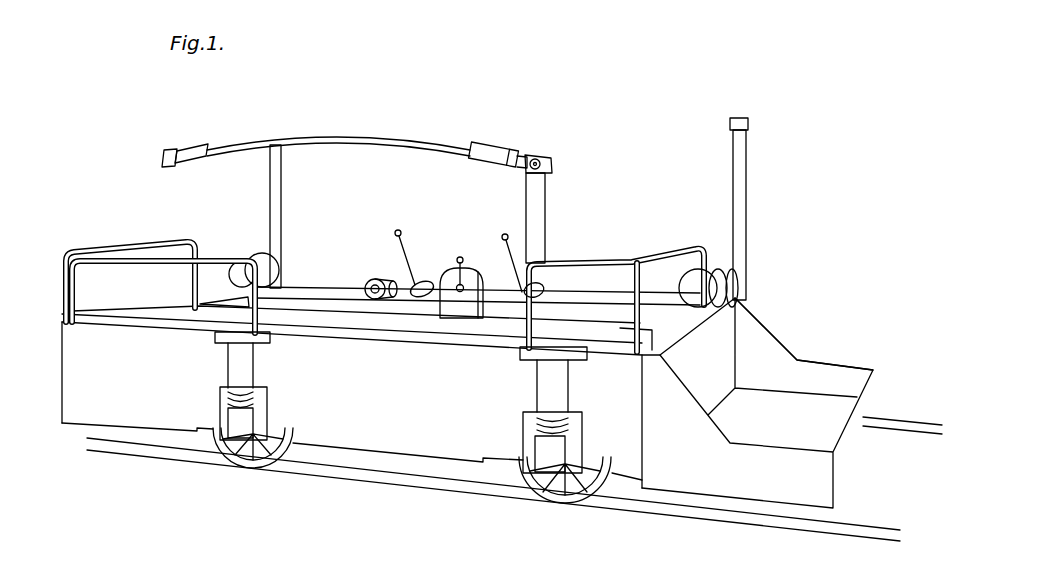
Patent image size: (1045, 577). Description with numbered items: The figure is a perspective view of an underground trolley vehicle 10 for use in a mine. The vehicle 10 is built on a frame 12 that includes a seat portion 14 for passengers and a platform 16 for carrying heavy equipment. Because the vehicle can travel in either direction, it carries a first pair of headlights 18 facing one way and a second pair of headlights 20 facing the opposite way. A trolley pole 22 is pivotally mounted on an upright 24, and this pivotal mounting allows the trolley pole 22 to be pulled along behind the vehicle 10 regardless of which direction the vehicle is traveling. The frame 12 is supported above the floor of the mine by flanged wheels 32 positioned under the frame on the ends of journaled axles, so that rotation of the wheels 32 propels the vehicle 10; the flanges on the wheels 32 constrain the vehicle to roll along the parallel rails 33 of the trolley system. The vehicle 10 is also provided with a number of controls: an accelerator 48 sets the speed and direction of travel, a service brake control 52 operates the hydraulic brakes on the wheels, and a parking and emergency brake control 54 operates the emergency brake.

The vehicle 10 is at (840, 232).
The frame 12 is at (663, 492).
The seat portion 14 is at (356, 316).
The platform 16 is at (764, 412).
The first pair of headlights 18 is at (256, 255).
The second pair of headlights 20 is at (726, 262).
The trolley pole 22 is at (353, 138).
The upright 24 is at (542, 222).
The flanged wheels 32 is at (237, 470).
The parallel rails 33 is at (913, 425).
The accelerator 48 is at (453, 313).
The service brake control 52 is at (502, 236).
The parking and emergency brake control 54 is at (395, 233).